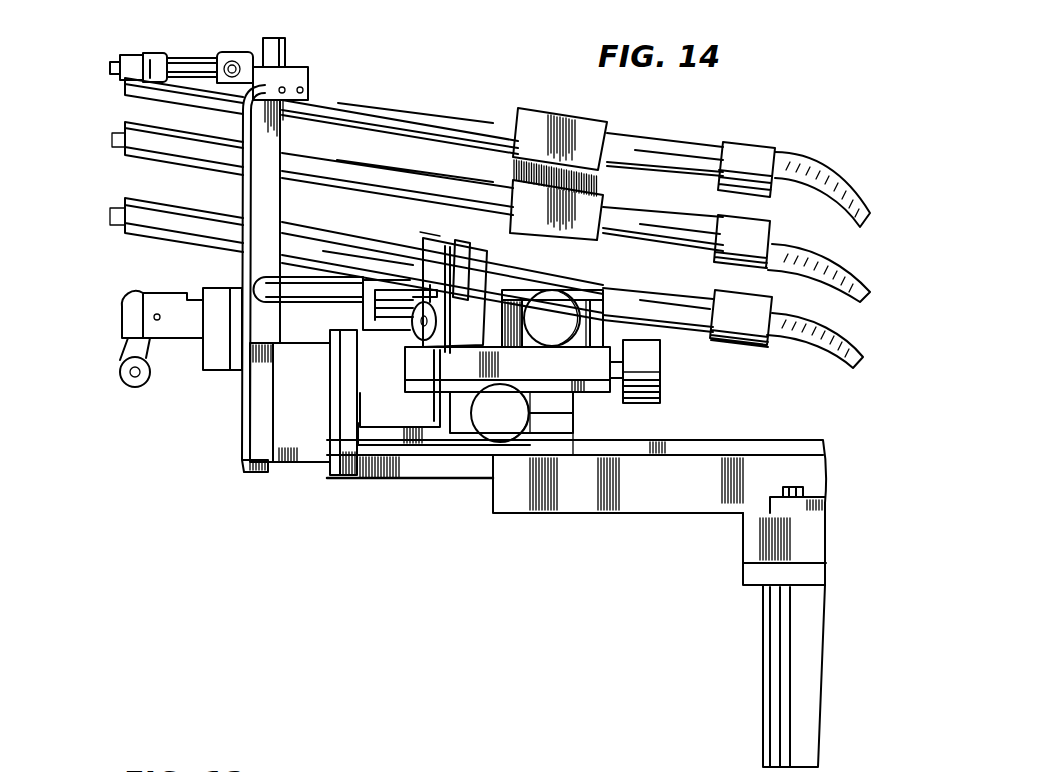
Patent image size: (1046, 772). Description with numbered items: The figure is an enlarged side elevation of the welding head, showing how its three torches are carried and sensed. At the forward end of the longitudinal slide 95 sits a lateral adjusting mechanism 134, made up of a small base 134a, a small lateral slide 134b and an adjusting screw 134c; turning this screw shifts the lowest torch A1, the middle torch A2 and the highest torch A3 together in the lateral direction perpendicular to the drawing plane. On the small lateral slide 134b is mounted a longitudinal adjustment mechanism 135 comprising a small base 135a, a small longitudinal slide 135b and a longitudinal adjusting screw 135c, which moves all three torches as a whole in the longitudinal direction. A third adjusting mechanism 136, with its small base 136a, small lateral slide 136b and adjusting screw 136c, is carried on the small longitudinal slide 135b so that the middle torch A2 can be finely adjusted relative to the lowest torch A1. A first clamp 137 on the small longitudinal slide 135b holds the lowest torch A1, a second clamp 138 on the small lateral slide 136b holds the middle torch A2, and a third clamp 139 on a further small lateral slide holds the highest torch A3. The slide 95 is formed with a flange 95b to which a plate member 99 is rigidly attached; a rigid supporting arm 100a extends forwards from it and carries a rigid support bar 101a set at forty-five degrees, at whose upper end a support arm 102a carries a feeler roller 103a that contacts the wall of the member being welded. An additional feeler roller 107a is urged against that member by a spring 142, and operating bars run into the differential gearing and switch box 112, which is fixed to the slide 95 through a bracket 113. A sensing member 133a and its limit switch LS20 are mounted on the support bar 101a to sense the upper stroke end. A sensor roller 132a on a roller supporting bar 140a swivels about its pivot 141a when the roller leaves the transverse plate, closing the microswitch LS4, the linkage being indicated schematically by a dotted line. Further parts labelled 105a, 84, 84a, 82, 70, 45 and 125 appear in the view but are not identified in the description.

The lowest torch A1 is at (463, 277).
The middle torch A2 is at (466, 212).
The highest torch A3 is at (466, 140).
The feeler roller 103a is at (150, 54).
The support arm 102a is at (190, 58).
The sensing member 133a is at (290, 45).
The limit switch LS20 is at (310, 80).
The support bar 101a is at (225, 327).
The microswitch LS4 is at (188, 391).
The roller supporting bar 140a is at (112, 328).
The pivot 141a is at (99, 301).
The sensor roller 132a is at (94, 408).
The rigid supporting arm 100a is at (291, 440).
The guide rod 105a is at (300, 277).
The feeler roller 107a is at (458, 253).
The first clamp 137 is at (468, 253).
The differential gearing and switch box 112 is at (425, 268).
The spring 142 is at (392, 292).
The third clamp 139 is at (590, 122).
The second clamp 138 is at (590, 205).
The third adjusting mechanism 136 is at (612, 322).
The small lateral slide 136b is at (527, 305).
The adjusting screw 136c is at (557, 307).
The small base 136a is at (582, 347).
The longitudinal adjusting screw 135c is at (662, 356).
The longitudinal adjustment mechanism 135 is at (667, 382).
The lateral adjusting mechanism 134 is at (575, 420).
The adjusting screw 134c is at (507, 442).
The small lateral slide 134b is at (543, 405).
The small base 134a is at (573, 513).
The small longitudinal slide 135b is at (458, 365).
The small base 135a is at (465, 446).
The flange 95b is at (350, 480).
The longitudinal slide 95 is at (576, 474).
The plate member 99 is at (330, 480).
The bracket 113 is at (430, 482).
The carriage block 84 is at (694, 500).
The connector 82 is at (803, 490).
The carriage plate 84a is at (826, 505).
The support block 70 is at (752, 545).
The shaft 45 is at (778, 653).
The reference element 125 is at (390, 761).